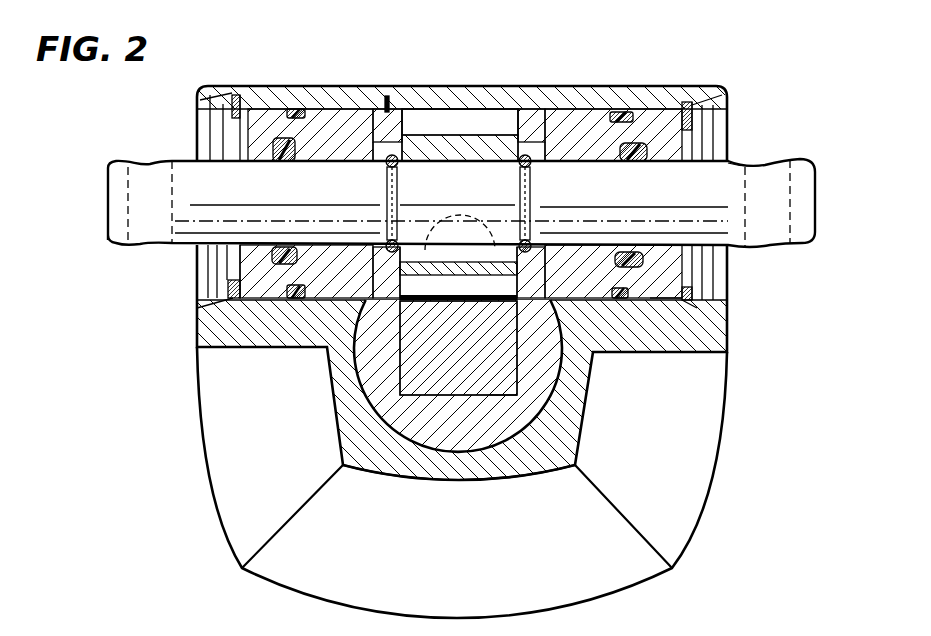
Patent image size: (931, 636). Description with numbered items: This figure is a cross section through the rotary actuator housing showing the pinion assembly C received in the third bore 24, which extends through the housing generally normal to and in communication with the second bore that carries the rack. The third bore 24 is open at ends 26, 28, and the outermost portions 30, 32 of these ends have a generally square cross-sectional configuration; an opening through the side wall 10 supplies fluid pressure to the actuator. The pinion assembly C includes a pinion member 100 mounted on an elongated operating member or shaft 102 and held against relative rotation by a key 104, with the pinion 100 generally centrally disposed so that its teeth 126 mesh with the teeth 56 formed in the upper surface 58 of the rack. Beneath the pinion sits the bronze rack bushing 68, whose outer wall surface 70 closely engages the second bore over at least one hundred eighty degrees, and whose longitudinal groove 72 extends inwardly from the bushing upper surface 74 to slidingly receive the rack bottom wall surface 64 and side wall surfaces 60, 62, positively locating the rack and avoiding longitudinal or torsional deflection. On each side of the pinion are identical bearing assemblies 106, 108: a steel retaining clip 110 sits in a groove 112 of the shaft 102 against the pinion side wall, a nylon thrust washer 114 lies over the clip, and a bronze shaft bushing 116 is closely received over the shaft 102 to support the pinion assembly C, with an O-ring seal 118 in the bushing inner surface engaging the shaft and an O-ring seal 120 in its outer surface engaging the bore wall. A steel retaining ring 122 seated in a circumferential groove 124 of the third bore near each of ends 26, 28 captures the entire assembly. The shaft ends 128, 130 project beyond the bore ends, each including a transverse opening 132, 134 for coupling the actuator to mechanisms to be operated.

The side wall 10 is at (693, 473).
The third bore 24 is at (387, 96).
The third bore end 26 is at (193, 130).
The third bore end 28 is at (712, 130).
The outermost portion of bore end 30 is at (213, 276).
The outermost portion of bore end 32 is at (703, 283).
The rack teeth 56 is at (503, 290).
The rack upper surface 58 is at (383, 294).
The rack side wall surface 60 is at (405, 349).
The rack side wall surface 62 is at (517, 352).
The rack bottom wall surface 64 is at (425, 478).
The rack bushing 68 is at (413, 480).
The bushing outer wall surface 70 is at (394, 424).
The longitudinal groove 72 is at (517, 378).
The bushing upper surface 74 is at (550, 301).
The pinion member 100 is at (430, 145).
The operating member or shaft 102 is at (328, 168).
The key 104 is at (444, 258).
The bearing assembly 106 is at (297, 107).
The bearing assembly 108 is at (580, 112).
The retaining clip 110 is at (532, 165).
The groove 112 is at (530, 192).
The thrust washer 114 is at (530, 120).
The shaft bushing 116 is at (660, 299).
The seal 118 is at (627, 162).
The seal 120 is at (611, 300).
The retaining ring 122 is at (240, 305).
The circumferential groove 124 is at (230, 300).
The pinion teeth 126 is at (472, 122).
The shaft end 128 is at (117, 243).
The shaft end 130 is at (803, 233).
The transverse opening 132 is at (172, 203).
The transverse opening 134 is at (748, 185).
The pinion assembly C is at (471, 118).